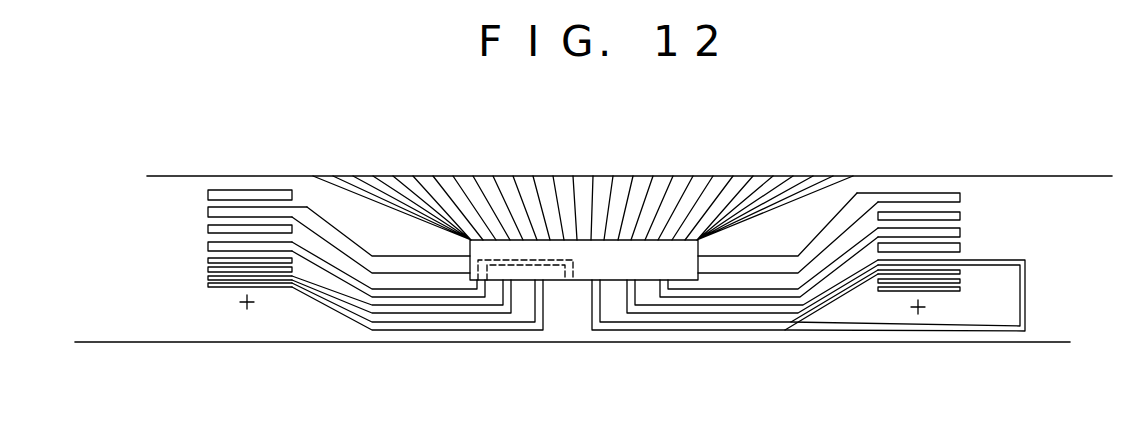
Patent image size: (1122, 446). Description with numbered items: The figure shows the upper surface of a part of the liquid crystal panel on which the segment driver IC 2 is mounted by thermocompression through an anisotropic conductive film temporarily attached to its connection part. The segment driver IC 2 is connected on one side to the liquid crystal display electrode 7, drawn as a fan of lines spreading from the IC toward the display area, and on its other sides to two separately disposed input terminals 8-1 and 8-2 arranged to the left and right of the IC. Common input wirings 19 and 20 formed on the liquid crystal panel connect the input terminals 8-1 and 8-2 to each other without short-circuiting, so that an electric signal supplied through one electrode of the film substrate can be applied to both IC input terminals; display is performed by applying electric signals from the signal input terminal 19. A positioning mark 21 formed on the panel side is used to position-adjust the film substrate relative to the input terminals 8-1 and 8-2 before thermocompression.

The liquid crystal display electrode 7 is at (862, 167).
The segment driver IC 2 is at (603, 262).
The common input wiring 19 is at (467, 292).
The common input wiring 20 is at (894, 332).
The positioning mark 21 is at (247, 308).
The input terminal 8-1 is at (195, 190).
The input terminal 8-2 is at (971, 192).